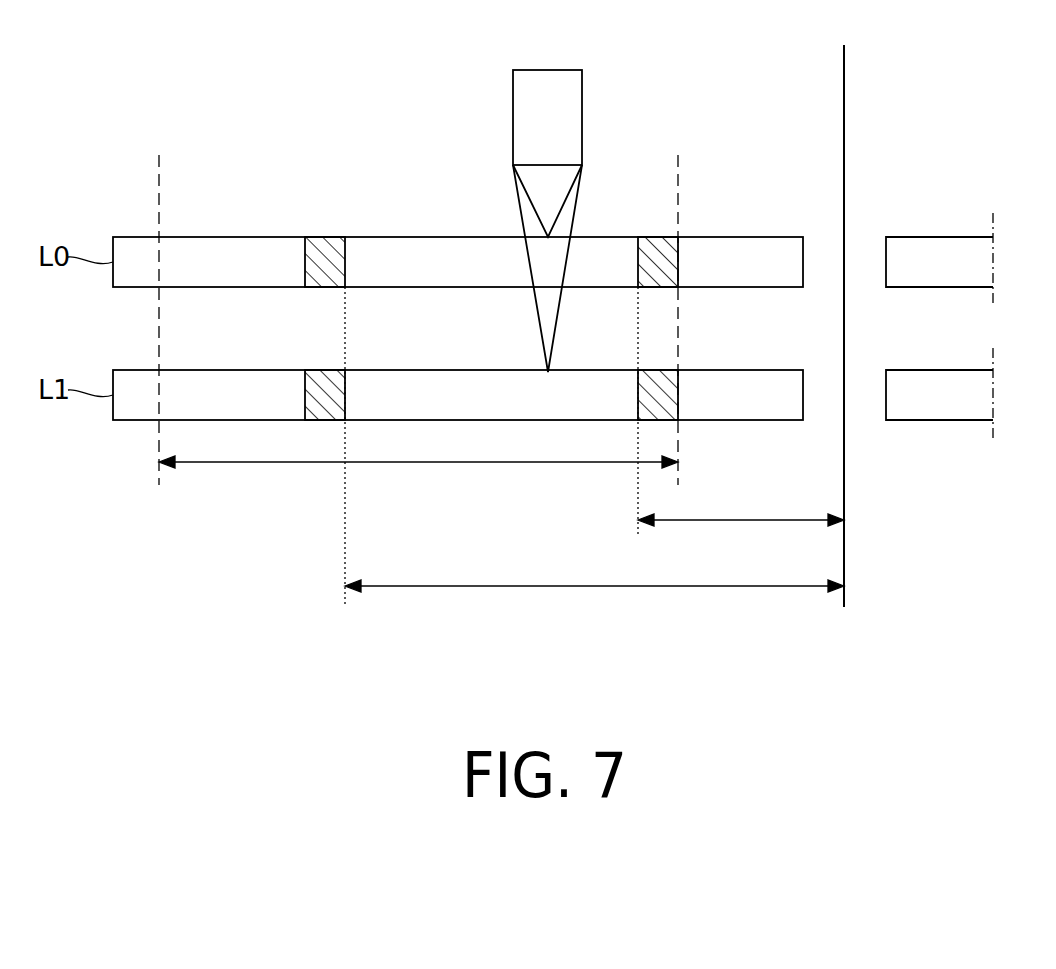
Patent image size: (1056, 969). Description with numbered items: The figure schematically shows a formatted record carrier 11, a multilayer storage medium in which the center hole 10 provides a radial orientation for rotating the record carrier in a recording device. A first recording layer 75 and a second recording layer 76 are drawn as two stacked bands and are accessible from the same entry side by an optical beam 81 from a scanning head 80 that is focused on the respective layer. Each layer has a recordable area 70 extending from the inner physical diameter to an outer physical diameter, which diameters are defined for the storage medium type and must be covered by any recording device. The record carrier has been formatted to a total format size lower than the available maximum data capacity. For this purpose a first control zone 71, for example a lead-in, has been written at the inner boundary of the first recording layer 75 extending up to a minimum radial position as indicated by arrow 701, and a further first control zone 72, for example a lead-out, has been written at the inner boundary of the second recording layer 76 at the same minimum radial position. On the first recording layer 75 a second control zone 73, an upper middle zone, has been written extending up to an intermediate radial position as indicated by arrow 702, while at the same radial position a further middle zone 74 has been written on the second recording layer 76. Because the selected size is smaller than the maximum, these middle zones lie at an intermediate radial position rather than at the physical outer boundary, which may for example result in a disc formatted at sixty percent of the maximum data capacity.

The center hole 10 is at (847, 100).
The record carrier 11 is at (129, 94).
The recordable area 70 is at (416, 462).
The arrow indicating minimum radial position 701 is at (742, 520).
The arrow indicating intermediate radial position 702 is at (593, 586).
The first control zone 71 is at (656, 237).
The further first control zone 72 is at (661, 370).
The second control zone 73 is at (322, 237).
The further middle zone 74 is at (322, 370).
The first recording layer 75 is at (410, 237).
The second recording layer 76 is at (410, 370).
The scanning head 80 is at (585, 100).
The optical beam 81 is at (515, 196).